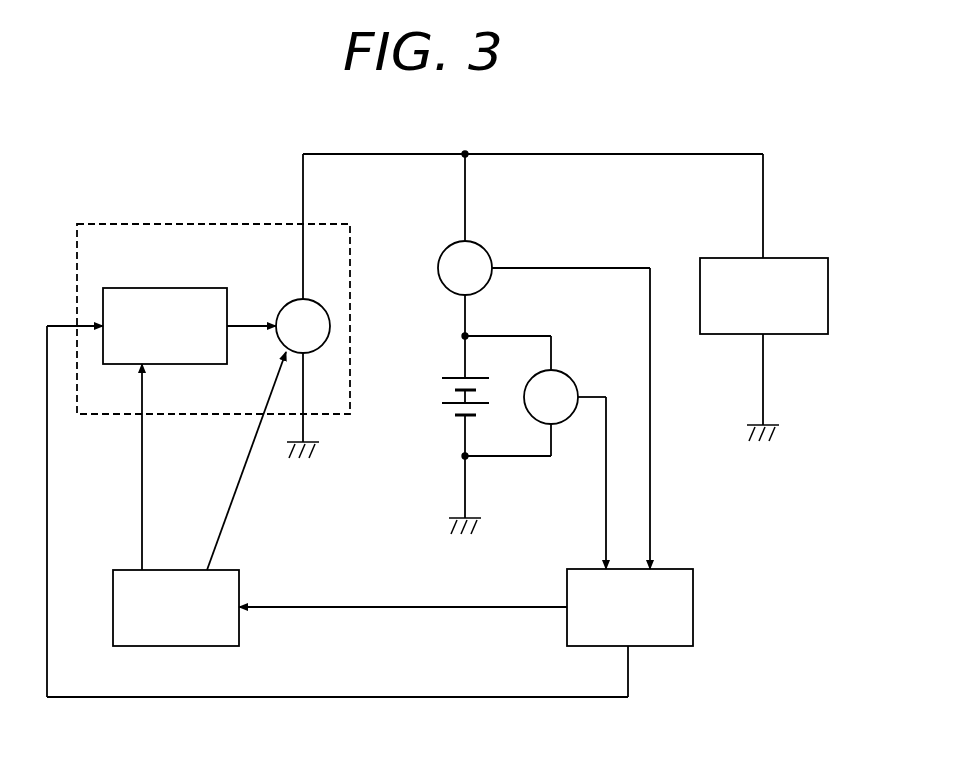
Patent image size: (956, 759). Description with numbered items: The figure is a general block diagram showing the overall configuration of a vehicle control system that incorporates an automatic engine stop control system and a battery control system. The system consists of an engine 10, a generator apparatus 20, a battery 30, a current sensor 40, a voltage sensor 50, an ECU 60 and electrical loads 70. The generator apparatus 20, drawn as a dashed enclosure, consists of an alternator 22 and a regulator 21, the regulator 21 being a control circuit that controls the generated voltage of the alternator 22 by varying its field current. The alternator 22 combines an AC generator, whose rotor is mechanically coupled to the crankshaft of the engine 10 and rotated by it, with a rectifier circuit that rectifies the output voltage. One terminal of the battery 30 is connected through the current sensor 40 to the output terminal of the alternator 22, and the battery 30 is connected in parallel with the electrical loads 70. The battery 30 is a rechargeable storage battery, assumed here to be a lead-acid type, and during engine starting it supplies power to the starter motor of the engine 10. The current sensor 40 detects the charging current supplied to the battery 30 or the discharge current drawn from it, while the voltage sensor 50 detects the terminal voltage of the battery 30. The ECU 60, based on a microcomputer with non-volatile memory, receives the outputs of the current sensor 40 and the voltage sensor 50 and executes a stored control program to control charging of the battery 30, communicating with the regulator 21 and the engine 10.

The engine 10 is at (127, 570).
The generator apparatus 20 is at (212, 224).
The regulator 21 is at (143, 288).
The alternator 22 is at (284, 306).
The battery 30 is at (449, 377).
The current sensor 40 is at (445, 249).
The voltage sensor 50 is at (570, 377).
The ECU 60 is at (679, 569).
The electrical loads 70 is at (784, 258).